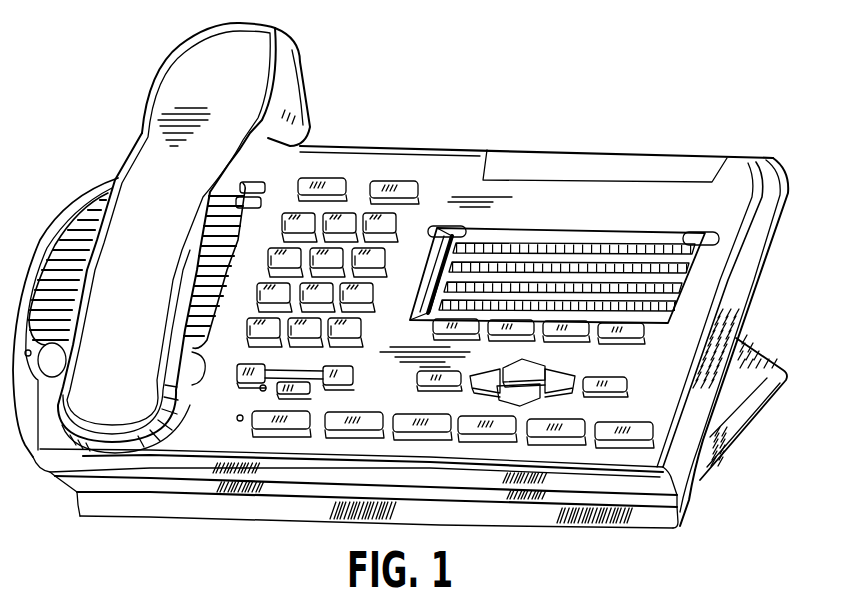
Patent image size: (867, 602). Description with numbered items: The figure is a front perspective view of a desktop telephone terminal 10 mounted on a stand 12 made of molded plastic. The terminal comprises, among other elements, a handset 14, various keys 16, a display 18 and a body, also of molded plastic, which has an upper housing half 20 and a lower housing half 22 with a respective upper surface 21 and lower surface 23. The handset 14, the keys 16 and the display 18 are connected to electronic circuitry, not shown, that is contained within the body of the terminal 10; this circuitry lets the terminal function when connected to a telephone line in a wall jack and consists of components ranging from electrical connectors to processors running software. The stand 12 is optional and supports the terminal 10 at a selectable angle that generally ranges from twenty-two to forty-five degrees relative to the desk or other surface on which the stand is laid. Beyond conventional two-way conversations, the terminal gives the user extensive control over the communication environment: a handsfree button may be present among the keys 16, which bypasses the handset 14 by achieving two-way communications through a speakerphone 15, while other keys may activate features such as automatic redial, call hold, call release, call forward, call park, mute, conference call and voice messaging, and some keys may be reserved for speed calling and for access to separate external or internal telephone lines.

The desktop telephone terminal 10 is at (424, 299).
The stand 12 is at (792, 404).
The handset 14 is at (185, 73).
The speakerphone 15 is at (90, 215).
The keys 16 is at (347, 223).
The display 18 is at (517, 253).
The upper housing half 20 is at (773, 183).
The upper surface 21 is at (717, 196).
The lower housing half 22 is at (773, 236).
The lower surface 23 is at (766, 291).